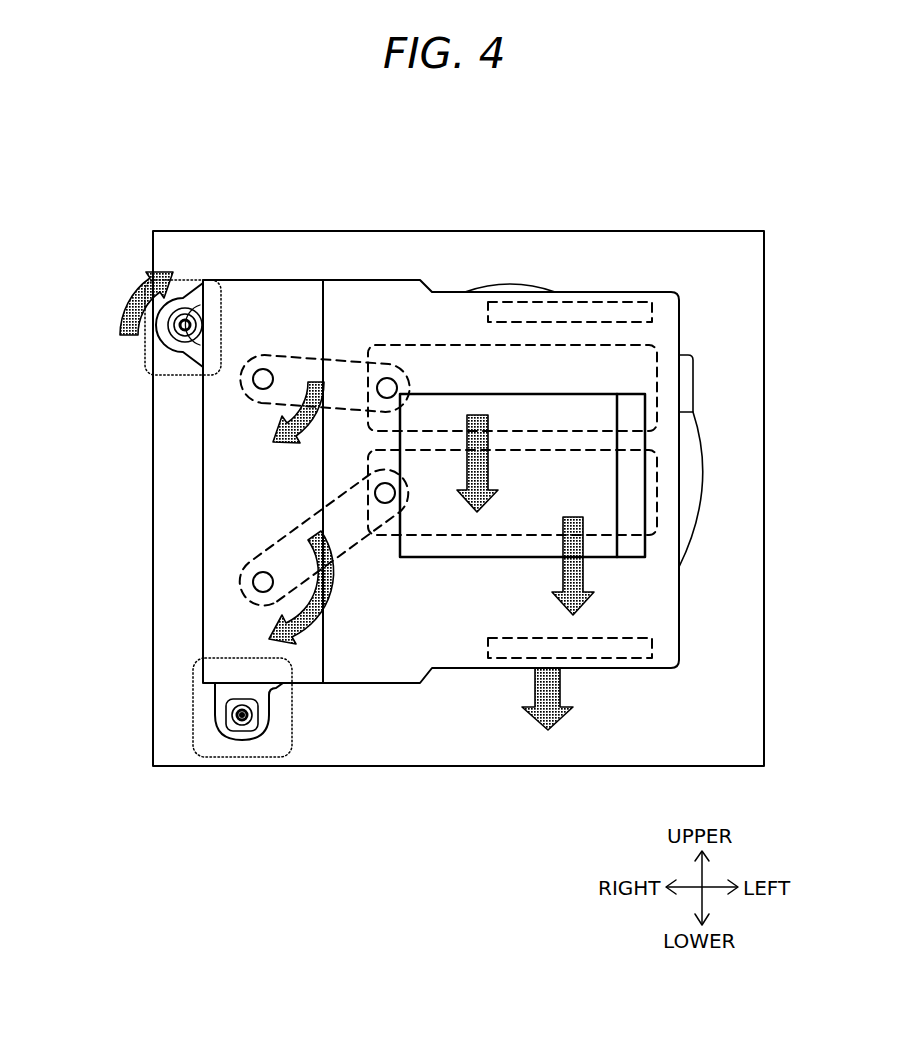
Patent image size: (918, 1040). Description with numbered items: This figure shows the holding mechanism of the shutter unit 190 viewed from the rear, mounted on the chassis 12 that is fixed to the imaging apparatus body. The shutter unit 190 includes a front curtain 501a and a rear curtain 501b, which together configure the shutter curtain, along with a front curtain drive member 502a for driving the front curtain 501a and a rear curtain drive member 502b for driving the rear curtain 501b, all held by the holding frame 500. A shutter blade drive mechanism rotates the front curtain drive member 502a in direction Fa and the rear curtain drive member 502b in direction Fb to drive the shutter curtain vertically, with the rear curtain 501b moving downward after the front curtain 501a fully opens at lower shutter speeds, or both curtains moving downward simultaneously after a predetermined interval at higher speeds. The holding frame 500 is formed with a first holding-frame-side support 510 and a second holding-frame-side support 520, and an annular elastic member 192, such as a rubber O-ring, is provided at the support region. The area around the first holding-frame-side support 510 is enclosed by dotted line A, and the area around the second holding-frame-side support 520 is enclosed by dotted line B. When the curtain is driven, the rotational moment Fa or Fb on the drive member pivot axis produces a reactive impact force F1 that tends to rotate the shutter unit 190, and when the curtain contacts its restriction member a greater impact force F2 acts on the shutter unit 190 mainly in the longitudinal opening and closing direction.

The chassis 12 is at (252, 252).
The shutter unit 190 is at (382, 308).
The holding frame 500 is at (343, 667).
The front curtain 501a is at (593, 503).
The rear curtain 501b is at (628, 370).
The front curtain drive member 502a is at (297, 558).
The rear curtain drive member 502b is at (298, 375).
The first holding-frame-side support 510 is at (217, 697).
The second holding-frame-side support 520 is at (165, 335).
The annular elastic member 192 is at (227, 725).
The dotted line A is at (193, 743).
The dotted line B is at (193, 278).
The impact force F1 is at (123, 300).
The impact force F2 is at (548, 730).
The direction Fa is at (313, 613).
The direction Fb is at (273, 430).